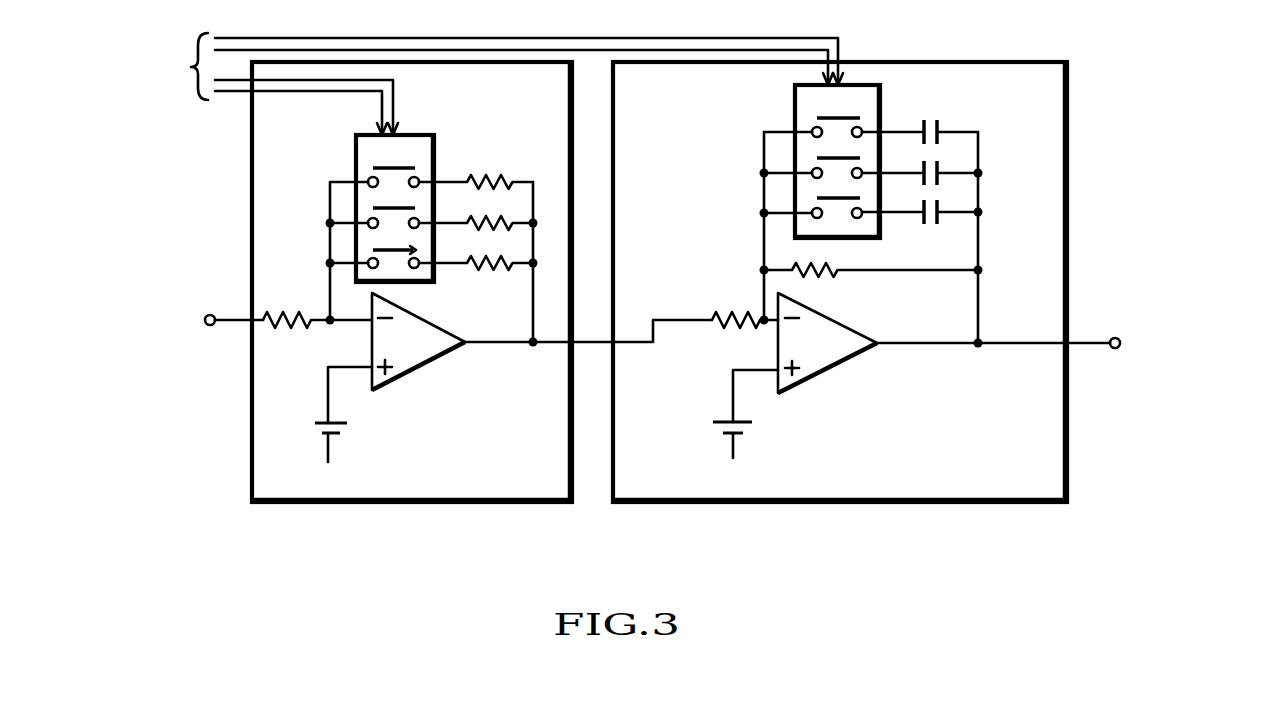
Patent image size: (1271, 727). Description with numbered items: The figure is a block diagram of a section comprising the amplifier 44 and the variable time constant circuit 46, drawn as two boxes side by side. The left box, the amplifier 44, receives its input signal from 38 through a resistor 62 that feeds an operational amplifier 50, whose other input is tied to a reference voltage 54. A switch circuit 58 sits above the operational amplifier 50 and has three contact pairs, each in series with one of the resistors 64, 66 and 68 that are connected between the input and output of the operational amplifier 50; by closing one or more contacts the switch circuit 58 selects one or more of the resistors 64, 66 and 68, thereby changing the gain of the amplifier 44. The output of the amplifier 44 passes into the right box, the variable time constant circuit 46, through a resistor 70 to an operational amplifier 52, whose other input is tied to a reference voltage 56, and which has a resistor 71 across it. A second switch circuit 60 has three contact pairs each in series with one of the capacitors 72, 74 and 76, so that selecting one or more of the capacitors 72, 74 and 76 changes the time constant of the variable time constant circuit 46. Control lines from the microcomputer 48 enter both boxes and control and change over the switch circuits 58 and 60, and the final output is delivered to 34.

The output 34 is at (1159, 341).
The input signal source 38 is at (174, 319).
The amplifier 44 is at (472, 492).
The variable time constant circuit 46 is at (842, 490).
The microcomputer 48 is at (460, 84).
The operational amplifier 50 is at (428, 362).
The operational amplifier 52 is at (830, 366).
The reference voltage 54 is at (345, 425).
The reference voltage 56 is at (745, 430).
The switch circuit 58 is at (434, 135).
The switch circuit 60 is at (795, 103).
The resistor 62 is at (286, 310).
The resistor 64 is at (490, 176).
The resistor 66 is at (472, 228).
The resistor 68 is at (490, 266).
The resistor 70 is at (720, 312).
The resistor 71 is at (826, 276).
The capacitor 72 is at (930, 127).
The capacitor 74 is at (940, 168).
The capacitor 76 is at (932, 216).